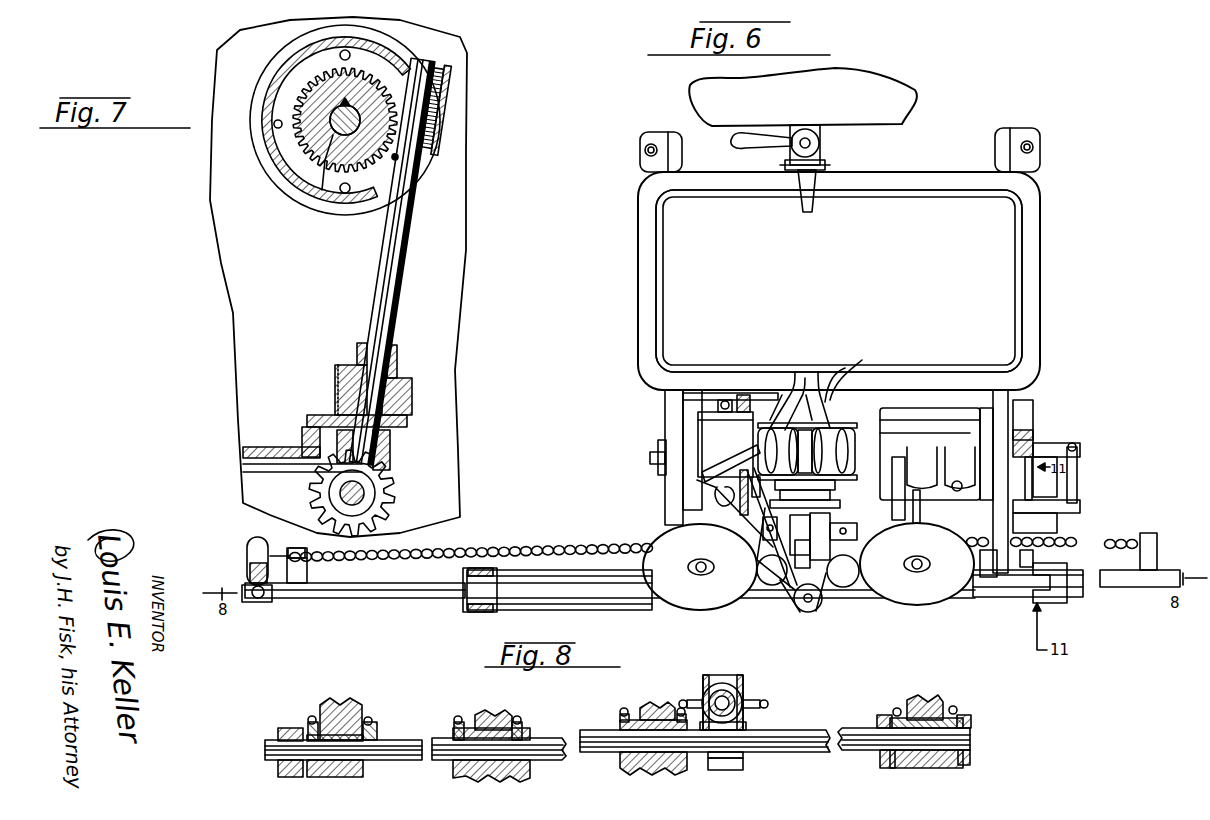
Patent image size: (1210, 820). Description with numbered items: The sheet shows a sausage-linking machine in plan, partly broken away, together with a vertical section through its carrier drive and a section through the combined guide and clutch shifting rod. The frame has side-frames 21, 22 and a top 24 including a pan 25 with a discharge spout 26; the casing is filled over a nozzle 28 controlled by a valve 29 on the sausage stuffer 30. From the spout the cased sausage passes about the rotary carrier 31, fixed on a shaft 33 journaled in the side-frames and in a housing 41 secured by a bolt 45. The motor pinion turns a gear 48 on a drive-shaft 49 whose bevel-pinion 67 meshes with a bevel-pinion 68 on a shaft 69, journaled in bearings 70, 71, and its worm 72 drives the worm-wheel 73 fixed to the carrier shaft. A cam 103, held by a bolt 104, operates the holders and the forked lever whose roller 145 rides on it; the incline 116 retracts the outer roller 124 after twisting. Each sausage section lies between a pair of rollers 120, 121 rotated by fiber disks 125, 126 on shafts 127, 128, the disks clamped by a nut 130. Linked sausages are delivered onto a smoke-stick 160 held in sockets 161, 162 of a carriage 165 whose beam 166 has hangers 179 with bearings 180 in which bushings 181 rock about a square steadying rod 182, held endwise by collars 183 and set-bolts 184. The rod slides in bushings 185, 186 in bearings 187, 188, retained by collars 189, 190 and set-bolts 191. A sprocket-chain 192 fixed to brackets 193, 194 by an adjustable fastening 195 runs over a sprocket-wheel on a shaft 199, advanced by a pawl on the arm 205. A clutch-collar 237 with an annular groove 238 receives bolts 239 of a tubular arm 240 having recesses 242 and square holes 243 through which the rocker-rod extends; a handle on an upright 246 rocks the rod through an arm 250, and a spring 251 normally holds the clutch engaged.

In FIG. 6, the side-frame 21 is at (675, 408).
In FIG. 6, the side-frame 22 is at (1008, 395).
In FIG. 6, the top 24 is at (1015, 318).
In FIG. 6, the pan 25 is at (1005, 255).
In FIG. 6, the discharge spout 26 is at (860, 360).
In FIG. 6, the nozzle 28 is at (812, 205).
In FIG. 6, the valve 29 is at (822, 150).
In FIG. 6, the sausage stuffer 30 is at (862, 62).
In FIG. 6, the rotary carrier 31 is at (830, 525).
In FIG. 7, the shaft 33 is at (330, 160).
In FIG. 6, the shaft 33 is at (652, 458).
In FIG. 7, the housing 41 is at (275, 160).
In FIG. 6, the housing 41 is at (952, 428).
In FIG. 7, the bolt 45 is at (355, 52).
In FIG. 6, the gear 48 is at (748, 390).
In FIG. 7, the drive-shaft 49 is at (366, 490).
In FIG. 7, the bevel-pinion 67 is at (385, 520).
In FIG. 7, the bevel-pinion 68 is at (390, 462).
In FIG. 7, the shaft 69 is at (390, 281).
In FIG. 7, the bearing 70 is at (395, 382).
In FIG. 7, the bearing 71 is at (452, 92).
In FIG. 7, the worm 72 is at (445, 135).
In FIG. 7, the worm-wheel 73 is at (330, 195).
In FIG. 6, the cam 103 is at (710, 420).
In FIG. 6, the bolt 104 is at (726, 398).
In FIG. 6, the incline 116 is at (730, 472).
In FIG. 6, the roller 120 is at (760, 450).
In FIG. 6, the roller 121 is at (845, 445).
In FIG. 6, the outer roller 124 is at (810, 395).
In FIG. 6, the rotating disk 125 is at (690, 602).
In FIG. 6, the rotating disk 126 is at (903, 605).
In FIG. 6, the shaft 127 is at (690, 512).
In FIG. 6, the shaft 128 is at (925, 512).
In FIG. 6, the nut 130 is at (705, 564).
In FIG. 6, the roller 145 is at (246, 553).
In FIG. 6, the smoke-stick 160 is at (555, 598).
In FIG. 6, the socket 161 is at (465, 612).
In FIG. 6, the socket 162 is at (1067, 598).
In FIG. 6, the carriage 165 is at (392, 600).
In FIG. 6, the beam 166 is at (315, 600).
In FIG. 8, the hanger 179 is at (335, 700).
In FIG. 8, the bearing 180 is at (322, 715).
In FIG. 8, the bushing 181 is at (340, 778).
In FIG. 8, the steadying rod 182 is at (545, 762).
In FIG. 8, the collar 183 is at (378, 733).
In FIG. 8, the set-bolt 184 is at (308, 720).
In FIG. 8, the bushing 185 is at (476, 712).
In FIG. 8, the bushing 186 is at (645, 712).
In FIG. 8, the bearing 187 is at (498, 715).
In FIG. 8, the bearing 188 is at (665, 705).
In FIG. 8, the collar 189 is at (455, 725).
In FIG. 8, the collar 190 is at (623, 720).
In FIG. 8, the set-bolt 191 is at (458, 716).
In FIG. 6, the sprocket-chain 192 is at (522, 548).
In FIG. 6, the bracket 193 is at (285, 560).
In FIG. 6, the bracket 194 is at (1150, 527).
In FIG. 6, the fastening 195 is at (308, 566).
In FIG. 8, the shaft 199 is at (745, 708).
In FIG. 6, the arm 205 is at (1033, 425).
In FIG. 8, the clutch-collar 237 is at (742, 685).
In FIG. 8, the annular groove 238 is at (722, 690).
In FIG. 8, the bolt 239 is at (690, 700).
In FIG. 8, the arm 240 is at (728, 770).
In FIG. 8, the recess 242 is at (750, 725).
In FIG. 8, the square hole 243 is at (745, 756).
In FIG. 6, the upright 246 is at (258, 600).
In FIG. 8, the arm 250 is at (265, 758).
In FIG. 6, the spring 251 is at (248, 574).